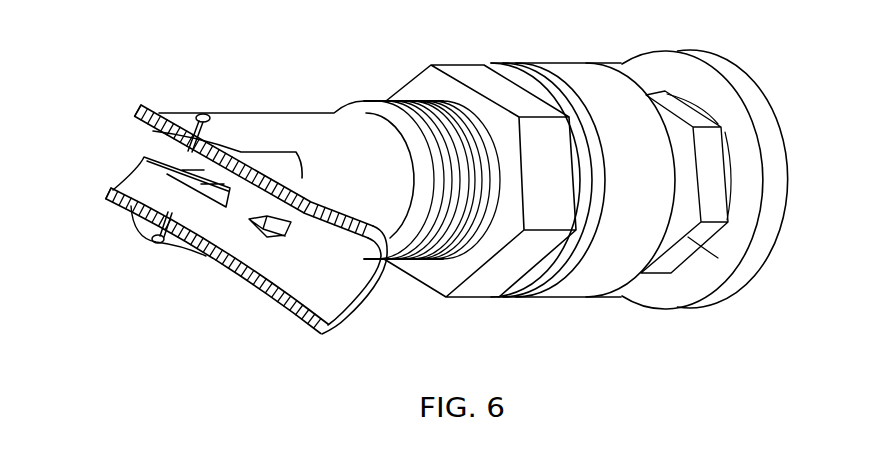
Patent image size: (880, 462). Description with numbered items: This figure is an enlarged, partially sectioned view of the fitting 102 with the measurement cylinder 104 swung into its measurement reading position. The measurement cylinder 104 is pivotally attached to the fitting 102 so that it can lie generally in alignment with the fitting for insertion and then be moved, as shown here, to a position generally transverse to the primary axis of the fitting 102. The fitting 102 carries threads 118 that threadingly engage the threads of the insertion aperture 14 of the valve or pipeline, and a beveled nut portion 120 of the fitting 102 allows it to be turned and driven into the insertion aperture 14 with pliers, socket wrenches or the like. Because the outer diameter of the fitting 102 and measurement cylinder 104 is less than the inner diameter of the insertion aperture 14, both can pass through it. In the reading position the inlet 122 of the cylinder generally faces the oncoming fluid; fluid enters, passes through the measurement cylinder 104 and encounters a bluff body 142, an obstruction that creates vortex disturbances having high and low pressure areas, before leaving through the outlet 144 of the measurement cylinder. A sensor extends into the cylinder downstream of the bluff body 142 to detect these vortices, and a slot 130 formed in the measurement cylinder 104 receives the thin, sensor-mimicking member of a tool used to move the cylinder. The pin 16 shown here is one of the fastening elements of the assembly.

The insertion aperture 14 is at (200, 113).
The screw 16 is at (155, 242).
The fitting 102 is at (262, 122).
The measurement cylinder 104 is at (217, 252).
The threads 118 is at (385, 100).
The beveled nut portion 120 is at (465, 70).
The inlet 122 is at (347, 290).
The slot 130 is at (152, 132).
The bluff body 142 is at (273, 232).
The outlet 144 is at (137, 187).